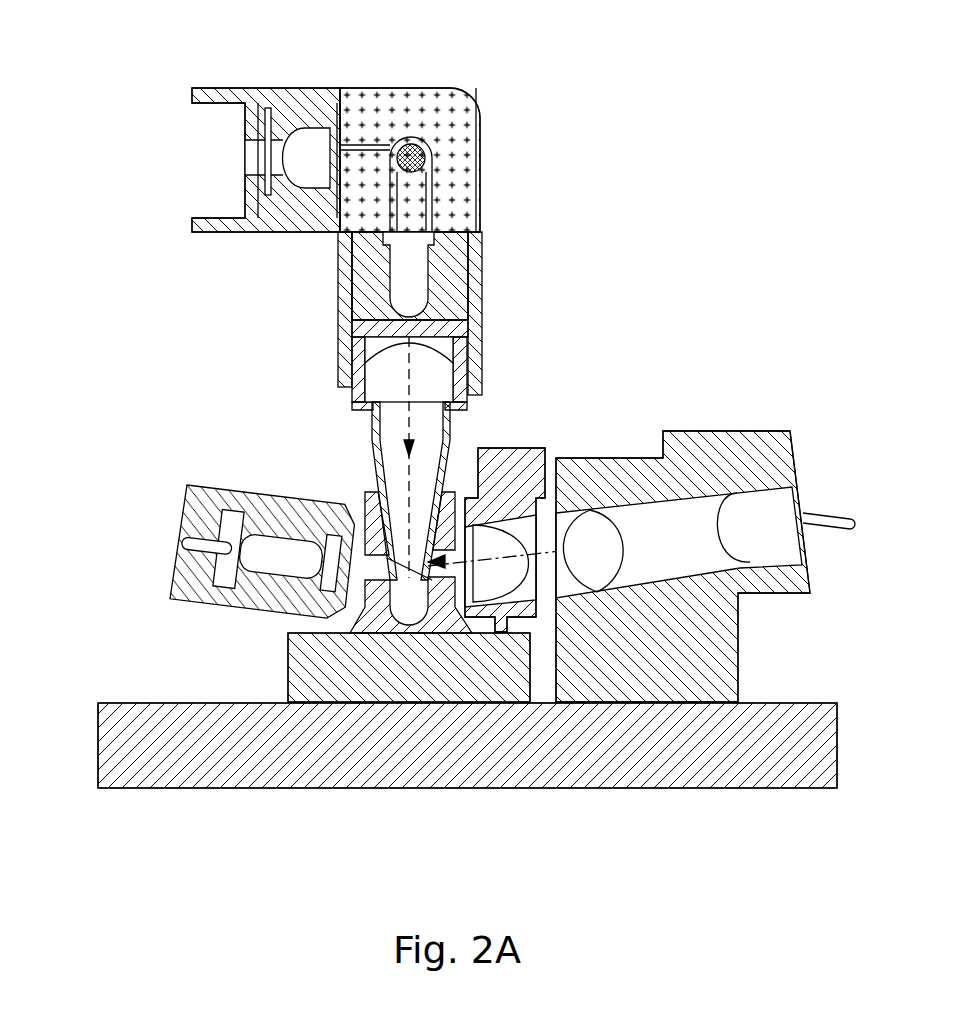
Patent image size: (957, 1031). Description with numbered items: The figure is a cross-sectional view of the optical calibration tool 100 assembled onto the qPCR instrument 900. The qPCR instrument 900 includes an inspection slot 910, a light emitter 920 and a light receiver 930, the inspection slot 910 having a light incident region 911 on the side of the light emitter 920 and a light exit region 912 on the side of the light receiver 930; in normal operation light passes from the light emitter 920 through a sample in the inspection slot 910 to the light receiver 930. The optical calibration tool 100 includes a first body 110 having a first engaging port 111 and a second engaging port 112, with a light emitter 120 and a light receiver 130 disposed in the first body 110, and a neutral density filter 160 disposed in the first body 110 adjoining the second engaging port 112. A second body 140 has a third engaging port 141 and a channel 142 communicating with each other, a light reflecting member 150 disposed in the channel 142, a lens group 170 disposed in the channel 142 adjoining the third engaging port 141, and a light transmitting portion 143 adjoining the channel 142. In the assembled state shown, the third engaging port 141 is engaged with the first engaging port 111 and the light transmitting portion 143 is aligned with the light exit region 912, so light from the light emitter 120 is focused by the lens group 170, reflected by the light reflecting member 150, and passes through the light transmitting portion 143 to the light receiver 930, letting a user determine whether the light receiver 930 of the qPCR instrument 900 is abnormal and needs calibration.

The optical calibration tool 100 is at (518, 88).
The first body 110 is at (458, 181).
The first engaging port 111 is at (480, 345).
The second engaging port 112 is at (231, 90).
The light emitter 120 is at (420, 284).
The light receiver 130 is at (306, 140).
The second body 140 is at (452, 417).
The third engaging port 141 is at (468, 380).
The channel 142 is at (370, 420).
The light transmitting portion 143 is at (479, 563).
The light reflecting member 150 is at (395, 560).
The neutral density filter 160 is at (268, 200).
The lens group 170 is at (385, 378).
The qPCR instrument 900 is at (141, 436).
The inspection slot 910 is at (409, 628).
The light incident region 911 is at (381, 600).
The light exit region 912 is at (443, 600).
The light emitter 920 is at (267, 557).
The light receiver 930 is at (773, 538).